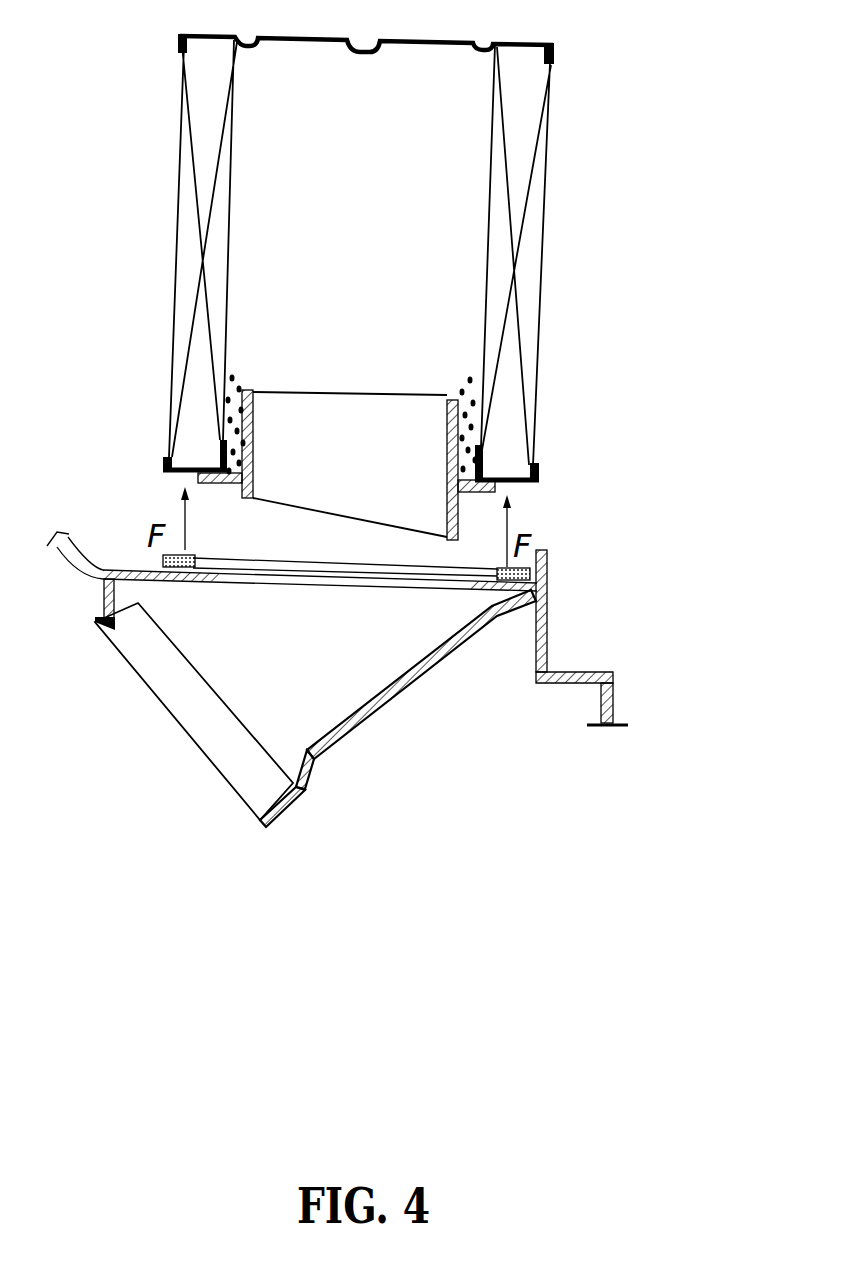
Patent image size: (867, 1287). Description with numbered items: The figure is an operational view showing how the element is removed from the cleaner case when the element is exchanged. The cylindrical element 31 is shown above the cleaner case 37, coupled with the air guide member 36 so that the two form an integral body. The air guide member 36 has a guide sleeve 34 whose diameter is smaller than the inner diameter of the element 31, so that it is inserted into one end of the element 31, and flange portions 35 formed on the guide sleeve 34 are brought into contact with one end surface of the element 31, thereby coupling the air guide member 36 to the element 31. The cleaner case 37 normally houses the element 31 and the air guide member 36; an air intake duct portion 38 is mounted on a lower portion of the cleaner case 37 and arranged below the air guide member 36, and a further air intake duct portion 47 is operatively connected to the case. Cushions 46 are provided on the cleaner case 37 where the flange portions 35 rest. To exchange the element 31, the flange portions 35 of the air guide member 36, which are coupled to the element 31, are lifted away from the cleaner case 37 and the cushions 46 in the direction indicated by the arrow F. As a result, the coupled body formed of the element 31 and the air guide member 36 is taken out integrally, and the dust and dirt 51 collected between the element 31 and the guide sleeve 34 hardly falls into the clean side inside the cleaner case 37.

The cylindrical element 31 is at (577, 98).
The guide sleeve 34 is at (453, 398).
The flange portions 35 is at (220, 487).
The air guide member 36 is at (328, 378).
The cleaner case 37 is at (534, 698).
The air intake duct portion 38 is at (325, 781).
The cushion 46 is at (160, 560).
The air intake duct portion 47 is at (613, 698).
The dust and dirt 51 is at (232, 400).